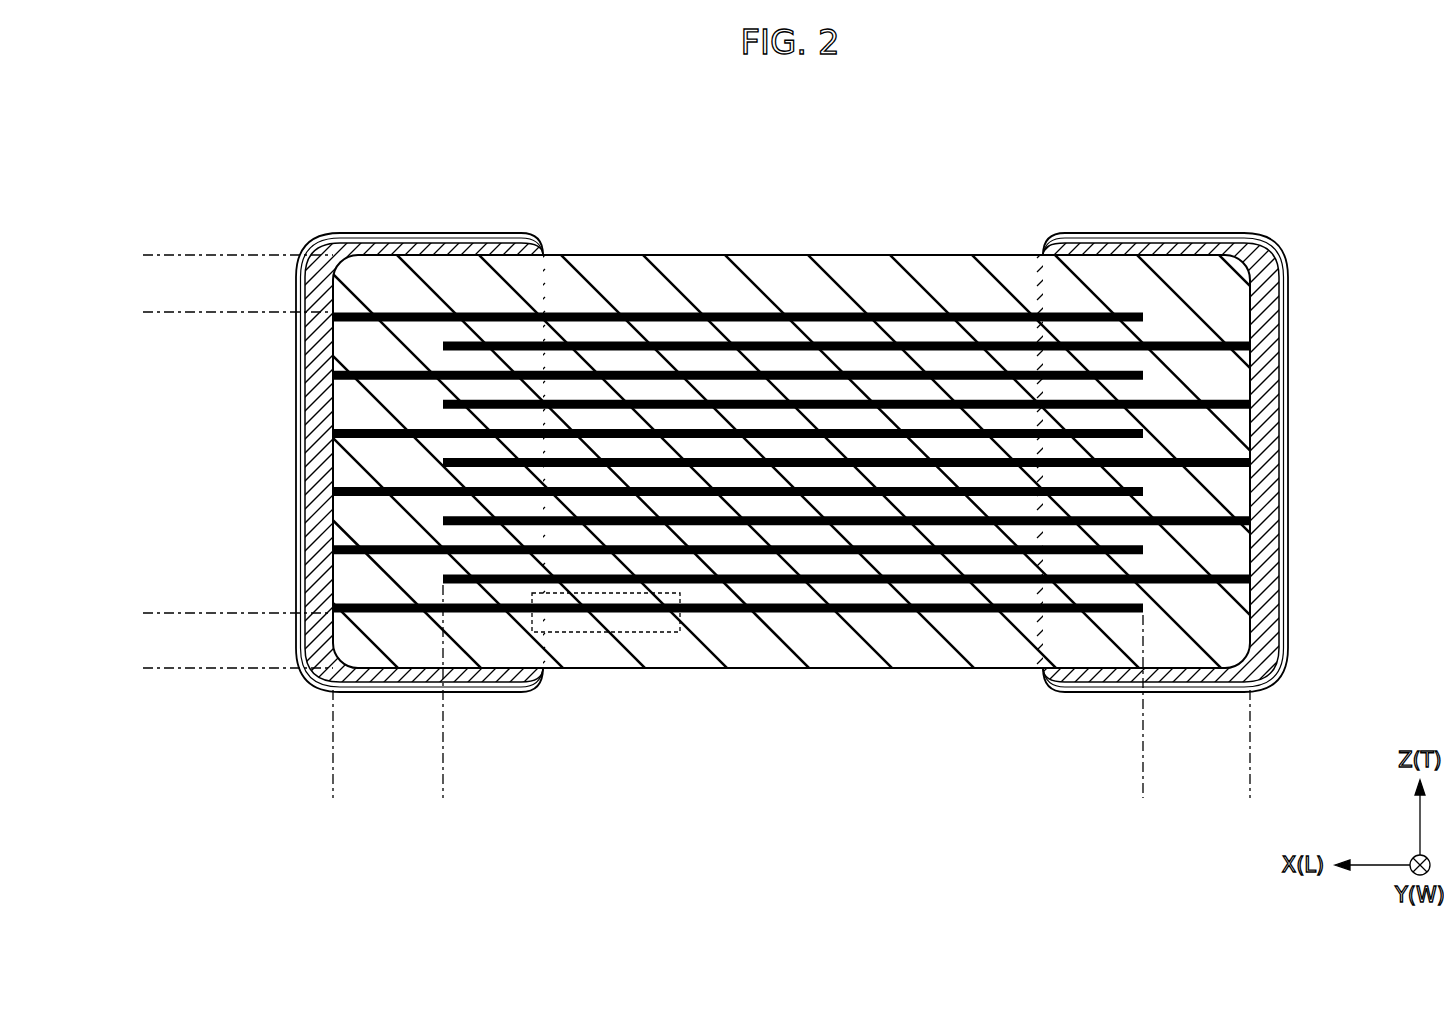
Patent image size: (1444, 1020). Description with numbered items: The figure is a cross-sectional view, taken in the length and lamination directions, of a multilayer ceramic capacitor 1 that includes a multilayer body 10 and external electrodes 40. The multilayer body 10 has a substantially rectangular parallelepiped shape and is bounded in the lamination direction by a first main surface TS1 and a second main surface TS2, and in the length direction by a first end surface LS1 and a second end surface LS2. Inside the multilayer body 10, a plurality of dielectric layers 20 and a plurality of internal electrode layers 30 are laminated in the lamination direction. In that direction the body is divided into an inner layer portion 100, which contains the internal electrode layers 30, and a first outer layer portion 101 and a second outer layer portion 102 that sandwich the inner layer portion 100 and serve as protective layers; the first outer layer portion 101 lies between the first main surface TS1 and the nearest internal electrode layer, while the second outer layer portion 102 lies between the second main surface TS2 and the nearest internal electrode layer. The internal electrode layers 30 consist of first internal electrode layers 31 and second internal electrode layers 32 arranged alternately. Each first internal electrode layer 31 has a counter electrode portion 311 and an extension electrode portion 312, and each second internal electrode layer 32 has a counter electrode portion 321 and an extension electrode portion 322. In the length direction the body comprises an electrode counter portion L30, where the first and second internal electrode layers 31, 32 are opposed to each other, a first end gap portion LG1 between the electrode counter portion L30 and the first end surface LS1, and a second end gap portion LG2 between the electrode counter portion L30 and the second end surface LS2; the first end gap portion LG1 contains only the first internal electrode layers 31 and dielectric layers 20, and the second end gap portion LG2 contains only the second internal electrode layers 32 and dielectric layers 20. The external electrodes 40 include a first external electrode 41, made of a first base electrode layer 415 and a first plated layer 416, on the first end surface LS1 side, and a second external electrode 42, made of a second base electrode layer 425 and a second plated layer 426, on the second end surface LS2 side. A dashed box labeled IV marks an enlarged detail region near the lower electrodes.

The multilayer ceramic capacitor 1 is at (1155, 168).
The multilayer body 10 is at (1008, 255).
The dielectric layers 20 is at (795, 655).
The internal electrode layers 30 is at (791, 343).
The first internal electrode layers 31 is at (738, 365).
The second internal electrode layers 32 is at (846, 351).
The counter electrode portion 311 is at (623, 313).
The extension electrode portion 312 is at (412, 313).
The counter electrode portion 321 is at (905, 345).
The extension electrode portion 322 is at (1185, 338).
The external electrodes 40 is at (792, 466).
The first external electrode 41 is at (343, 466).
The second external electrode 42 is at (1240, 466).
The first base electrode layer 415 is at (323, 500).
The first plated layer 416 is at (198, 452).
The second base electrode layer 425 is at (1265, 435).
The second plated layer 426 is at (1387, 395).
The inner layer portion 100 is at (201, 461).
The first outer layer portion 101 is at (138, 255).
The second outer layer portion 102 is at (201, 640).
The first end surface LS1 is at (330, 573).
The second end surface LS2 is at (1252, 550).
The first main surface TS1 is at (577, 255).
The second main surface TS2 is at (645, 668).
The first end gap portion LG1 is at (333, 798).
The second end gap portion LG2 is at (1143, 798).
The electrode counter portion L30 is at (443, 798).
The section IV is at (593, 632).